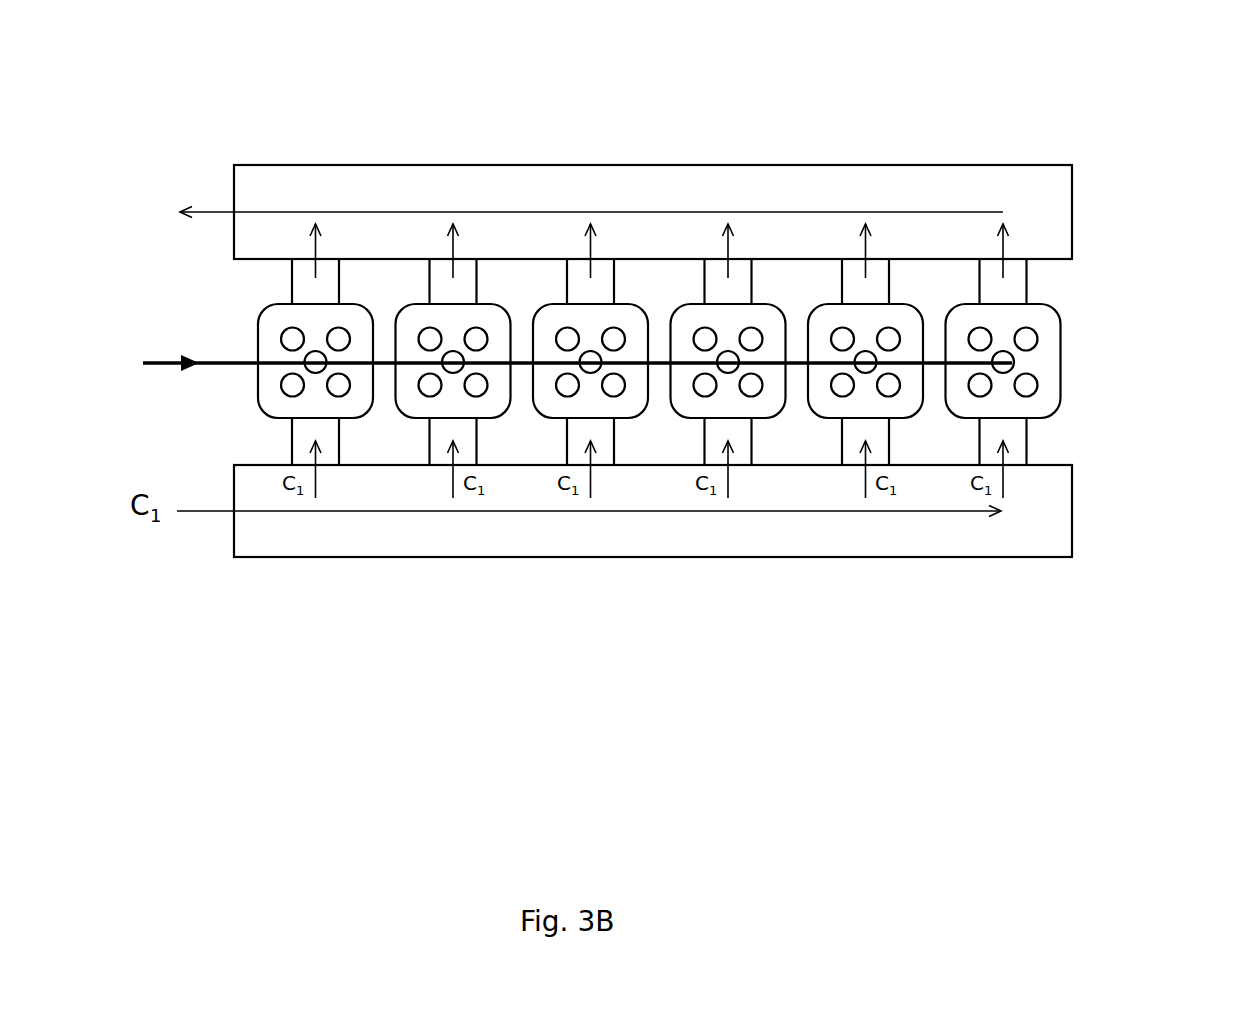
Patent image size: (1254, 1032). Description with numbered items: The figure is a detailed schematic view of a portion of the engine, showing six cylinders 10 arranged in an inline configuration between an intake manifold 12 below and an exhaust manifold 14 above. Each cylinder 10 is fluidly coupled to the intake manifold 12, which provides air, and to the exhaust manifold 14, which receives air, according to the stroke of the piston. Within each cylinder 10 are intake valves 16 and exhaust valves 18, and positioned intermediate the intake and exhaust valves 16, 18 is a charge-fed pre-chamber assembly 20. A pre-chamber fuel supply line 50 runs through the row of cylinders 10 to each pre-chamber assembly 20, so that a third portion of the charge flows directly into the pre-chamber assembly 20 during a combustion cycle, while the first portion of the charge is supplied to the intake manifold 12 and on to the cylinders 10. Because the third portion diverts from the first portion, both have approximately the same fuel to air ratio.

The cylinder 10 is at (1063, 409).
The intake manifold 12 is at (935, 559).
The exhaust manifold 14 is at (934, 160).
The intake valve 16 is at (417, 389).
The exhaust valve 18 is at (418, 339).
The charge-fed pre-chamber assembly 20 is at (452, 377).
The pre-chamber fuel supply line 50 is at (652, 367).